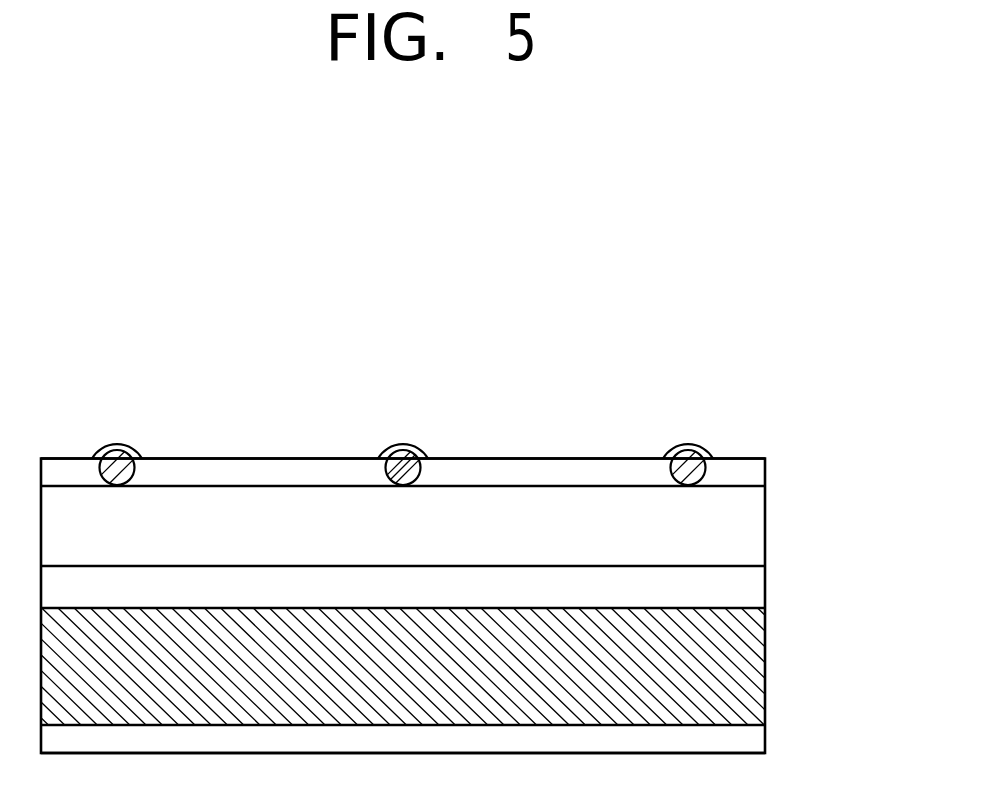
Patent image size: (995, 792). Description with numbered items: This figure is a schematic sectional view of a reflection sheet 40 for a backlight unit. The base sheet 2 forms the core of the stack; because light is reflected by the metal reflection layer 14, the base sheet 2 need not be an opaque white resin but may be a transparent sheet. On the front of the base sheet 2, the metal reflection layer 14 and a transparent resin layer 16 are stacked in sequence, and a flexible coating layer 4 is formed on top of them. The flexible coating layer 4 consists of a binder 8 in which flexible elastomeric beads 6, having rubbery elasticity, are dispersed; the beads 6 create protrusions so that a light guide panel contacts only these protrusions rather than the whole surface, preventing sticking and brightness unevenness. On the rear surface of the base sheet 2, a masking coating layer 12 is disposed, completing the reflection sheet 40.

The reflection sheet 40 is at (190, 433).
The flexible elastomeric bead 6 is at (402, 462).
The binder 8 is at (608, 472).
The flexible coating layer 4 is at (750, 474).
The transparent resin layer 16 is at (750, 525).
The metal reflection layer 14 is at (750, 585).
The base sheet 2 is at (750, 668).
The masking coating layer 12 is at (750, 740).